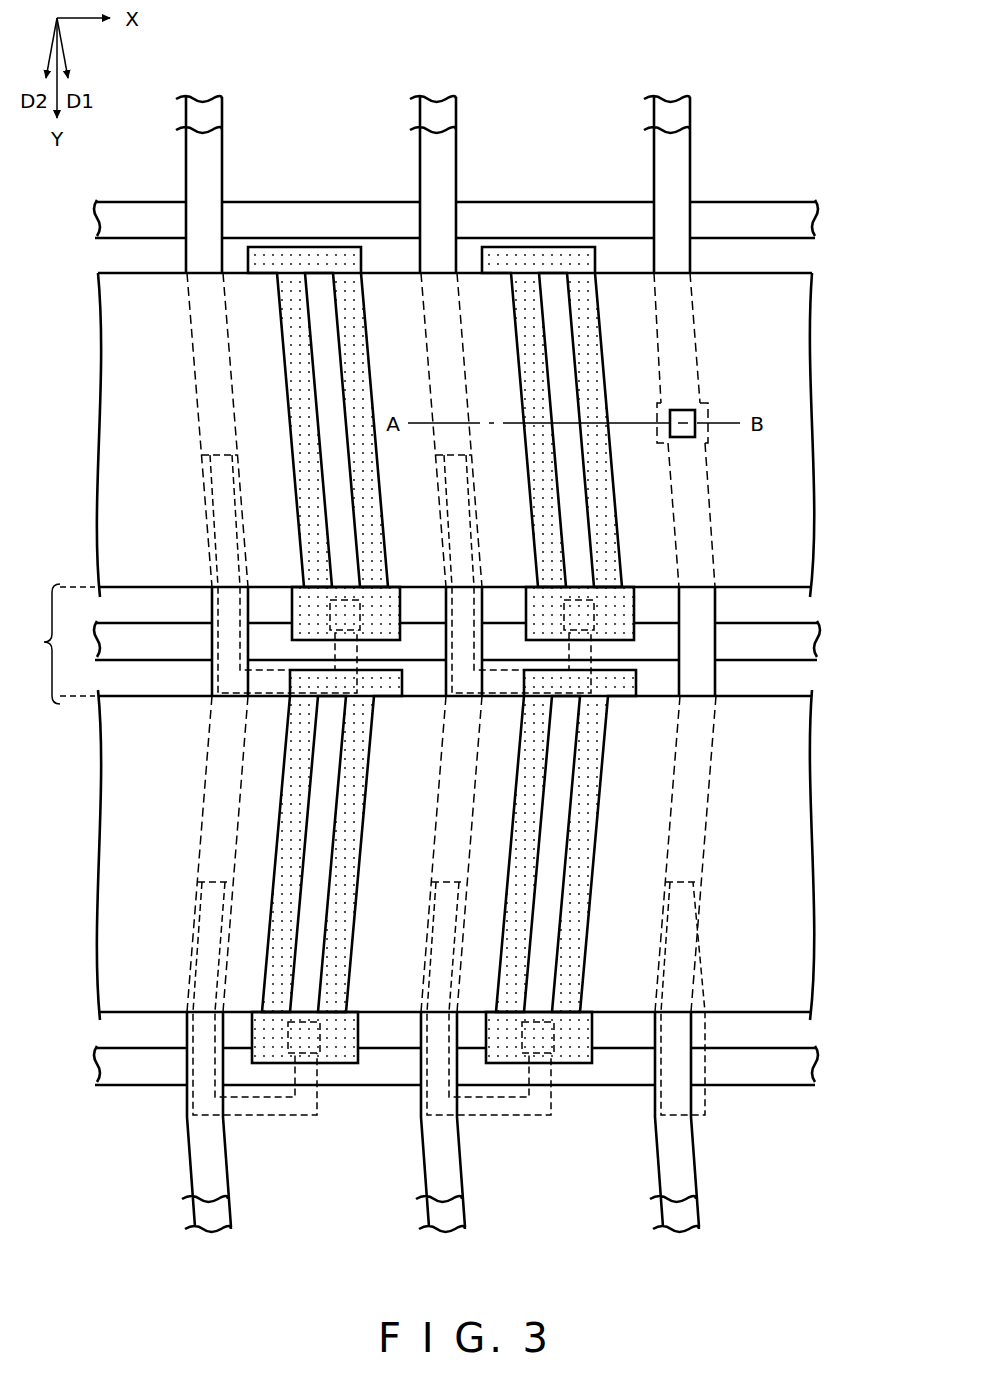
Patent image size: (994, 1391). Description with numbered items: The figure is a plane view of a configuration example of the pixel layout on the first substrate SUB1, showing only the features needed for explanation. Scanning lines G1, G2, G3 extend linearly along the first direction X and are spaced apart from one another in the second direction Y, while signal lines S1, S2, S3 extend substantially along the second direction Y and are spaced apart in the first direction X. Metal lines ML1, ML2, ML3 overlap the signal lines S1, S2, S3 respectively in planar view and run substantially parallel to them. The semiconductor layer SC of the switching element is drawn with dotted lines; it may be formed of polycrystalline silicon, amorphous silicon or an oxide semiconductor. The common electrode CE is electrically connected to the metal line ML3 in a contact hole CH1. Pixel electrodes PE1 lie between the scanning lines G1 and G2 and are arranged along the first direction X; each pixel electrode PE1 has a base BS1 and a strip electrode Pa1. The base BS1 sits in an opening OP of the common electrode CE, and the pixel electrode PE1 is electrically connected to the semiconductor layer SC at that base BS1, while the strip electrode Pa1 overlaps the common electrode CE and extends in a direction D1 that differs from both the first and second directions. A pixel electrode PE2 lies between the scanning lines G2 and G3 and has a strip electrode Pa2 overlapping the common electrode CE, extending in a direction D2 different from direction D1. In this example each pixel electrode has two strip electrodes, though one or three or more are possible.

The first substrate SUB1 is at (778, 124).
The common electrode CE is at (102, 436).
The scanning line G1 is at (815, 220).
The scanning line G2 is at (817, 643).
The scanning line G3 is at (815, 1065).
The metal line ML1 is at (190, 1174).
The metal line ML2 is at (424, 1174).
The metal line ML3 is at (658, 1174).
The signal line S1 is at (217, 1222).
The signal line S2 is at (451, 1222).
The signal line S3 is at (685, 1222).
The contact hole CH1 is at (683, 405).
The pixel electrode PE1 is at (311, 247).
The strip electrode Pa1 is at (350, 368).
The base BS1 is at (400, 612).
The pixel electrode PE2 is at (370, 1085).
The strip electrode Pa2 is at (356, 773).
The semiconductor layer SC is at (360, 645).
The opening OP is at (50, 644).